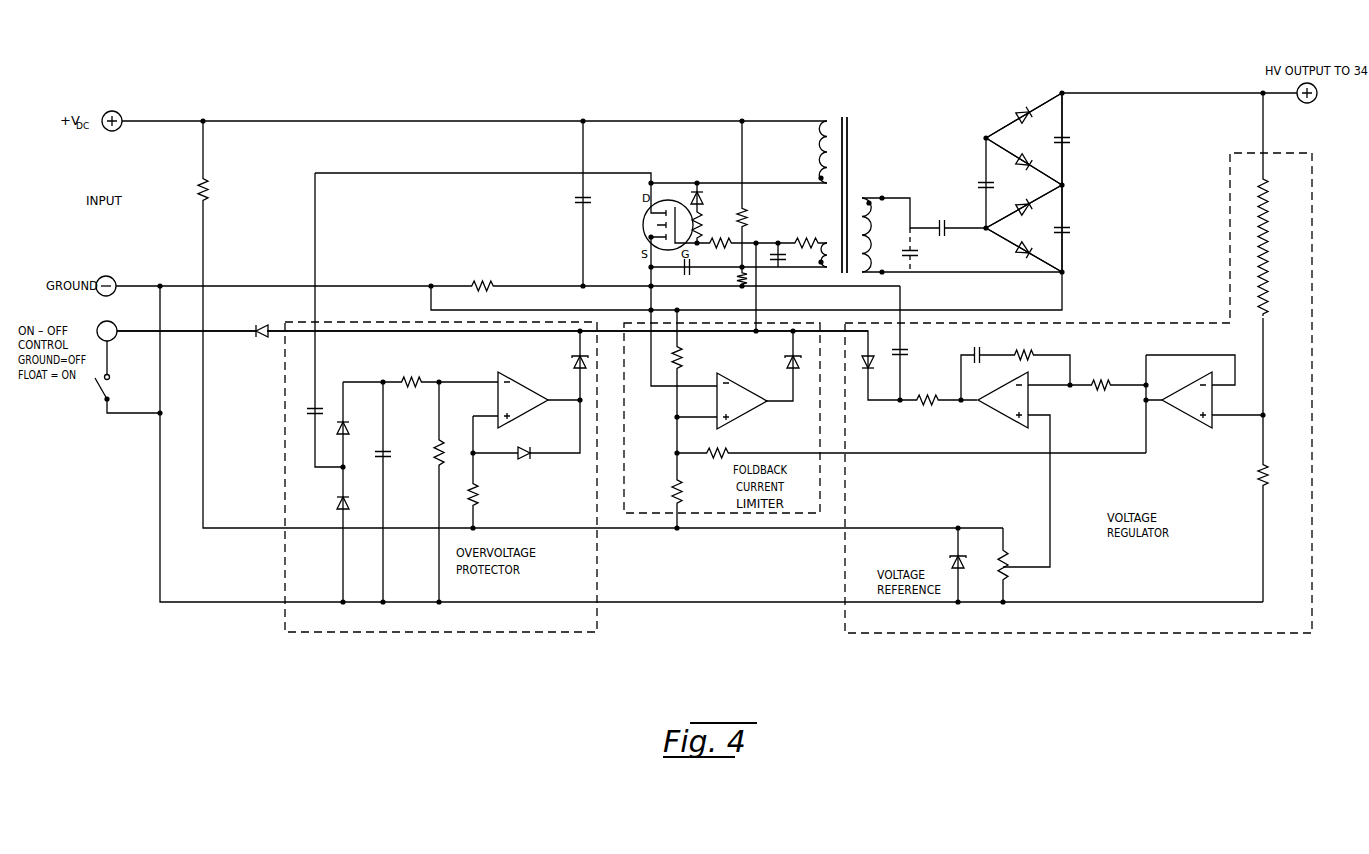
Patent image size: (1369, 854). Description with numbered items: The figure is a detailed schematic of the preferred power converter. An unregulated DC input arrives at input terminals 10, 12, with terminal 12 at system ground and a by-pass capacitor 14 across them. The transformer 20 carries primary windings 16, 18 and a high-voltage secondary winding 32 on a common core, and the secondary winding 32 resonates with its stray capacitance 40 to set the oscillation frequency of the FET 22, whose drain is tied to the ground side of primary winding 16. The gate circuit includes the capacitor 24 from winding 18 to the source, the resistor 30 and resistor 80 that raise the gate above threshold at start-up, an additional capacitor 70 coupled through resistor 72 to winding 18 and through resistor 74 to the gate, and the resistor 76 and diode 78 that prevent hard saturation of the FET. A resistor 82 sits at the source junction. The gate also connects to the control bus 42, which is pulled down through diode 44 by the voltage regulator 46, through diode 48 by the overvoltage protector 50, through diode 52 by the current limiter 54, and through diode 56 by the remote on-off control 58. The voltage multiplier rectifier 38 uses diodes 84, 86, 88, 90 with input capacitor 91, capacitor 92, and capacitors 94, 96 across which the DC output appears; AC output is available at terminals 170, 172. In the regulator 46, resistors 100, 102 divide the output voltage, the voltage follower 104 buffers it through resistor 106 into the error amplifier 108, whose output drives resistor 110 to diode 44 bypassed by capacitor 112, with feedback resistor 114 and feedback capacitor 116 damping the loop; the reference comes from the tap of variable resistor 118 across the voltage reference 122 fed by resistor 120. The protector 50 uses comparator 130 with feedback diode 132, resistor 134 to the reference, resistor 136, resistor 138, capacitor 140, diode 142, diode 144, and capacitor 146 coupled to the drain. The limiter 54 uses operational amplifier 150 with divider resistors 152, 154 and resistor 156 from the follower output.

The input terminal 10 is at (115, 111).
The input terminal 12 is at (108, 277).
The by-pass capacitor 14 is at (578, 199).
The primary winding 16 is at (827, 118).
The primary winding 18 is at (830, 245).
The transformer 20 is at (848, 140).
The FET 22 is at (643, 228).
The capacitor 24 is at (691, 268).
The resistor 30 is at (746, 216).
The secondary winding 32 is at (867, 238).
The voltage multiplier rectifier 38 is at (1071, 186).
The stray capacitance 40 is at (914, 256).
The control bus 42 is at (546, 332).
The diode 44 is at (872, 366).
The voltage regulator 46 is at (843, 613).
The diode 48 is at (574, 362).
The overvoltage protector 50 is at (283, 613).
The diode 52 is at (786, 362).
The current limiter 54 is at (640, 513).
The diode 56 is at (266, 310).
The remote on-off control 58 is at (99, 388).
The capacitor 70 is at (781, 264).
The resistor 72 is at (805, 243).
The resistor 74 is at (727, 236).
The resistor 76 is at (703, 218).
The diode 78 is at (702, 192).
The resistor 80 is at (738, 278).
The resistor 82 is at (483, 270).
The diode 84 is at (1018, 110).
The diode 86 is at (1038, 149).
The diode 88 is at (1027, 212).
The diode 90 is at (1016, 252).
The capacitor 91 is at (940, 227).
The capacitor 92 is at (982, 186).
The capacitor 94 is at (1069, 140).
The capacitor 96 is at (1069, 230).
The resistor 100 is at (1268, 228).
The resistor 102 is at (1258, 476).
The voltage follower 104 is at (1190, 428).
The resistor 106 is at (1095, 383).
The error amplifier 108 is at (986, 410).
The resistor 110 is at (935, 384).
The capacitor 112 is at (901, 351).
The feedback resistor 114 is at (1020, 353).
The feedback capacitor 116 is at (976, 352).
The variable resistor 118 is at (1006, 560).
The resistor 120 is at (207, 186).
The voltage reference 122 is at (950, 562).
The comparator 130 is at (526, 386).
The feedback diode 132 is at (520, 450).
The resistor 134 is at (476, 493).
The resistor 136 is at (436, 455).
The resistor 138 is at (416, 380).
The capacitor 140 is at (386, 452).
The diode 142 is at (348, 425).
The diode 144 is at (340, 502).
The capacitor 146 is at (312, 406).
The operational amplifier 150 is at (752, 410).
The resistor 152 is at (681, 356).
The resistor 154 is at (673, 481).
The resistor 156 is at (714, 452).
The terminal 170 is at (882, 198).
The terminal 172 is at (884, 274).